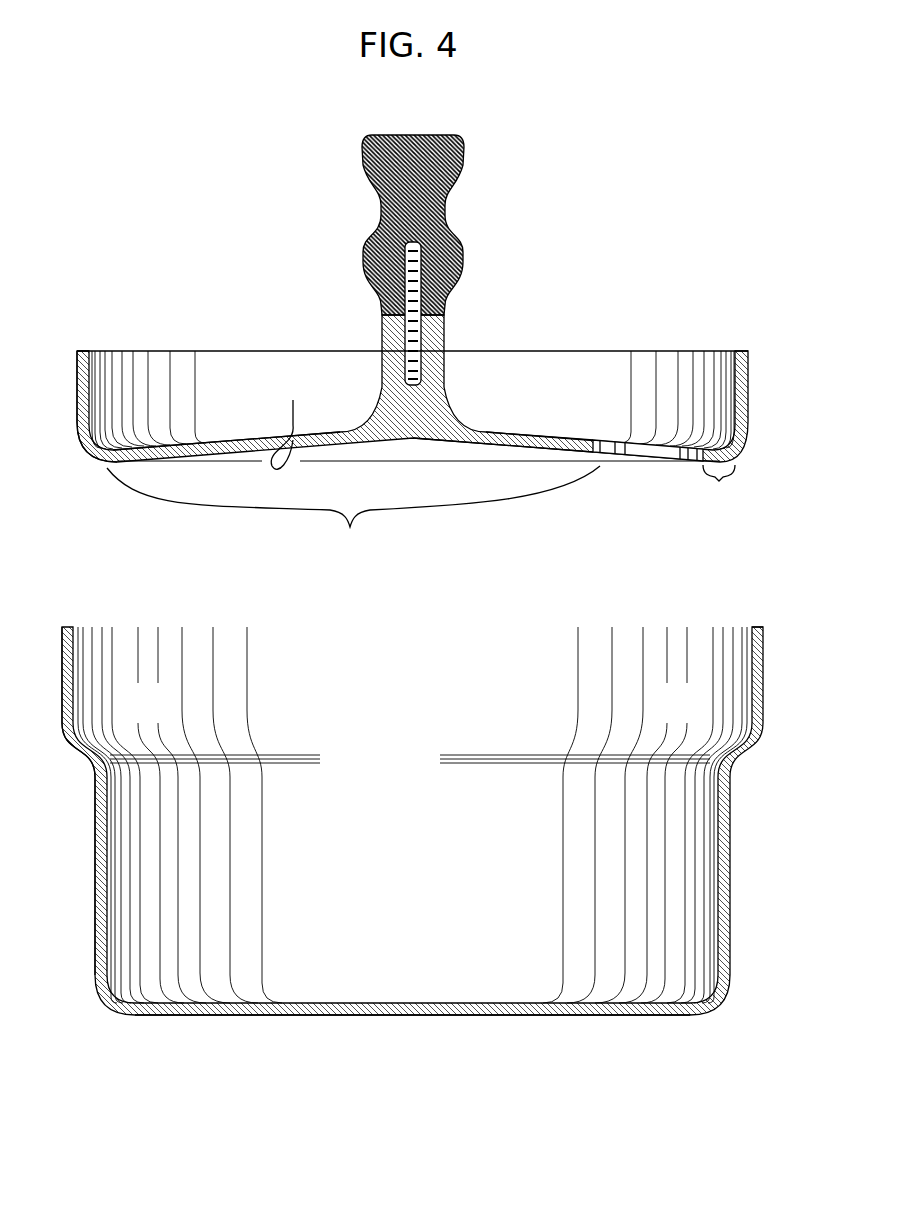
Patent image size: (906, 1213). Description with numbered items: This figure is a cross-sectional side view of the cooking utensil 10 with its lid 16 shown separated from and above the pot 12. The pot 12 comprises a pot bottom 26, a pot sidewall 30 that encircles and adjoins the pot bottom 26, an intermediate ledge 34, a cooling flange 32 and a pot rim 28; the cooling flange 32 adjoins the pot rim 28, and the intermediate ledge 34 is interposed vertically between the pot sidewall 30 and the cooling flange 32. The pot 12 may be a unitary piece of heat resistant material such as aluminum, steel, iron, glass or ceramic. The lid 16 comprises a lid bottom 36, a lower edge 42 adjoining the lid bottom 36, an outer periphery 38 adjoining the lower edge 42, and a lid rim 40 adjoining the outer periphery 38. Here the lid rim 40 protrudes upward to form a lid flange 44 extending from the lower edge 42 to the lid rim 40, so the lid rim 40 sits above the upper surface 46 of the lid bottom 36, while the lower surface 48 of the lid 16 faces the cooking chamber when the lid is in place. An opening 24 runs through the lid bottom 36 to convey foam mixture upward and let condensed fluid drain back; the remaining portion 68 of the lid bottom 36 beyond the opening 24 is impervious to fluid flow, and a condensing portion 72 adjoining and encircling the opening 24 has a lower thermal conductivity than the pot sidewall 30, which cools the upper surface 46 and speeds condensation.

The cooking utensil 10 is at (681, 183).
The pot 12 is at (733, 925).
The lid 16 is at (752, 385).
The opening 24 is at (639, 457).
The pot bottom 26 is at (350, 1016).
The pot rim 28 is at (762, 627).
The pot sidewall 30 is at (96, 898).
The cooling flange 32 is at (62, 684).
The intermediate ledge 34 is at (87, 745).
The lid bottom 36 is at (293, 400).
The outer periphery 38 is at (77, 398).
The lid rim 40 is at (548, 350).
The lower edge 42 is at (97, 455).
The lid flange 44 is at (75, 377).
The upper surface 46 is at (243, 434).
The lower surface 48 is at (505, 450).
The impervious portion 68 is at (348, 530).
The condensing portion 72 is at (548, 440).